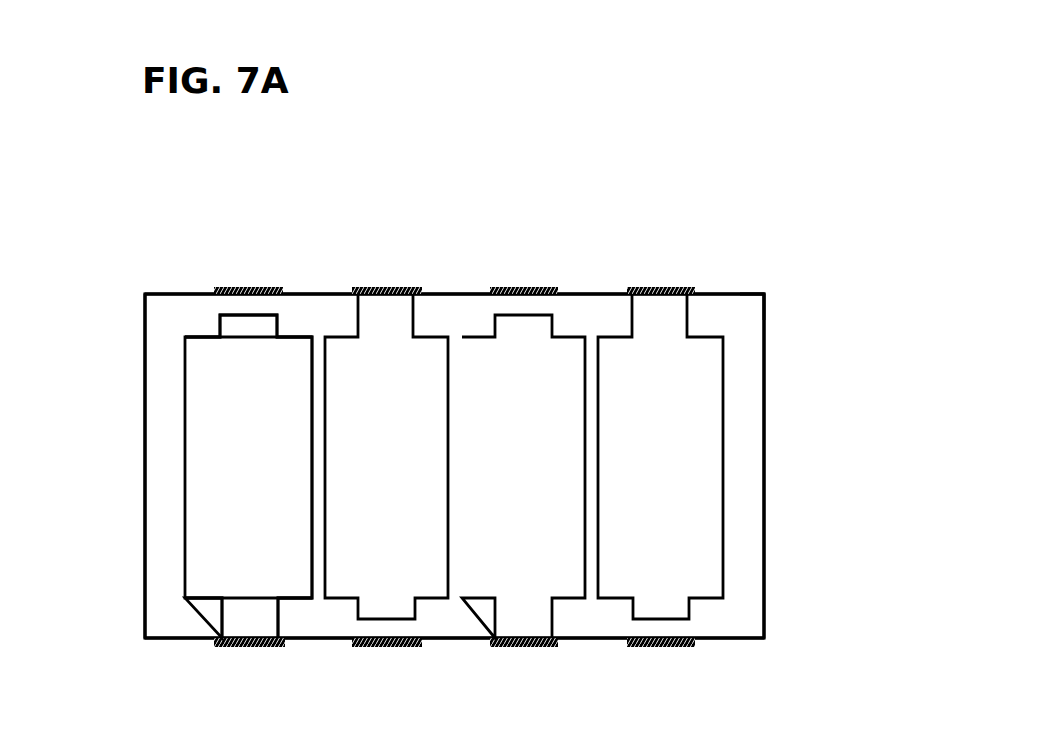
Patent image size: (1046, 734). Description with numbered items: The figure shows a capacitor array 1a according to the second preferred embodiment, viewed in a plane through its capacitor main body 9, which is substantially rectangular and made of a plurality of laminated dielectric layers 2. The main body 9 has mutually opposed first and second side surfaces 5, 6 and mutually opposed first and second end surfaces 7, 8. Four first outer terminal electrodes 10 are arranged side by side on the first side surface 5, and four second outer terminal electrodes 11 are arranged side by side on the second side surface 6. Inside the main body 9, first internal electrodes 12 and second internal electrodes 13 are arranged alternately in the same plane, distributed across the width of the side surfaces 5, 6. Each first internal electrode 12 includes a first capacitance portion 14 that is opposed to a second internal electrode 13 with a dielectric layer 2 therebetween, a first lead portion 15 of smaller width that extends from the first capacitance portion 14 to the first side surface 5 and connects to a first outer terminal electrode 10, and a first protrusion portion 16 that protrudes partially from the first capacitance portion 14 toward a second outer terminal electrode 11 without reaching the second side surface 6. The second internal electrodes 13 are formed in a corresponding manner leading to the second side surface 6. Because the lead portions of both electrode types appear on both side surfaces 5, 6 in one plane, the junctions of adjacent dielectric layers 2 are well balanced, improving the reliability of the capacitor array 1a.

The capacitor array 1a is at (154, 157).
The dielectric layer 2 is at (750, 328).
The first side surface 5 is at (455, 647).
The second side surface 6 is at (473, 293).
The first end surface 7 is at (146, 424).
The second end surface 8 is at (764, 424).
The capacitor main body 9 is at (770, 292).
The first outer terminal electrode 10 is at (385, 647).
The second outer terminal electrode 11 is at (243, 287).
The first internal electrode 12 is at (184, 477).
The second internal electrode 13 is at (435, 333).
The first capacitance portion 14 is at (196, 527).
The first lead portion 15 is at (240, 617).
The first protrusion portion 16 is at (226, 324).